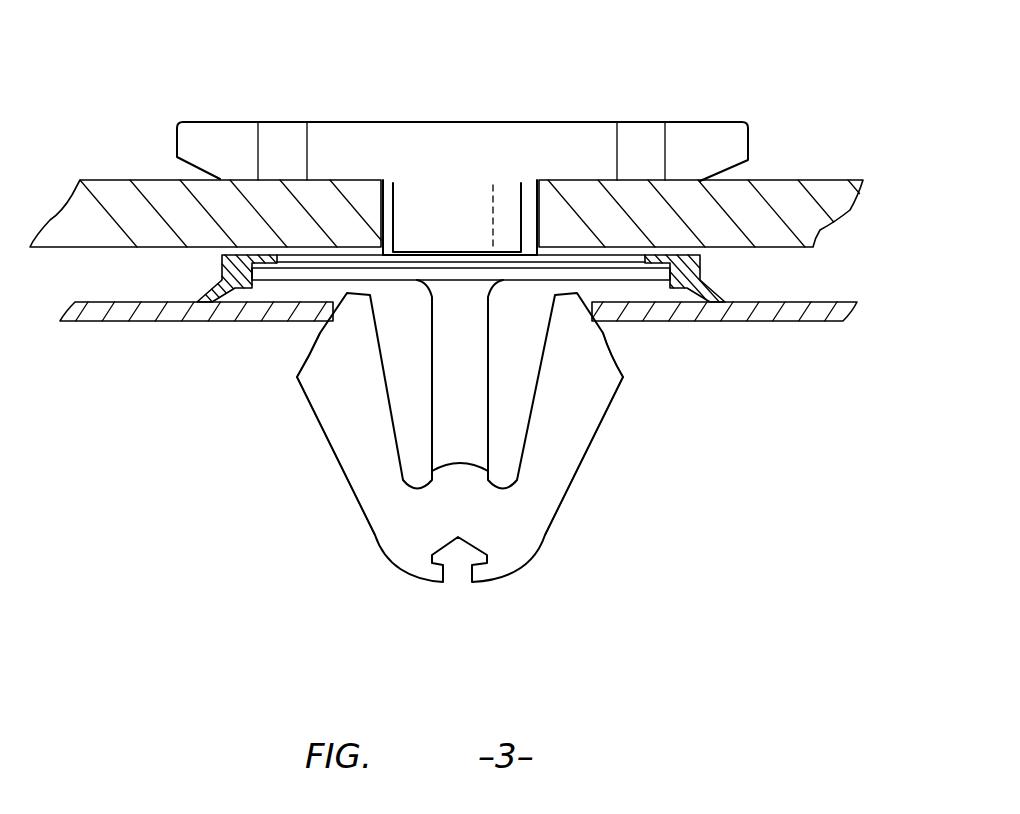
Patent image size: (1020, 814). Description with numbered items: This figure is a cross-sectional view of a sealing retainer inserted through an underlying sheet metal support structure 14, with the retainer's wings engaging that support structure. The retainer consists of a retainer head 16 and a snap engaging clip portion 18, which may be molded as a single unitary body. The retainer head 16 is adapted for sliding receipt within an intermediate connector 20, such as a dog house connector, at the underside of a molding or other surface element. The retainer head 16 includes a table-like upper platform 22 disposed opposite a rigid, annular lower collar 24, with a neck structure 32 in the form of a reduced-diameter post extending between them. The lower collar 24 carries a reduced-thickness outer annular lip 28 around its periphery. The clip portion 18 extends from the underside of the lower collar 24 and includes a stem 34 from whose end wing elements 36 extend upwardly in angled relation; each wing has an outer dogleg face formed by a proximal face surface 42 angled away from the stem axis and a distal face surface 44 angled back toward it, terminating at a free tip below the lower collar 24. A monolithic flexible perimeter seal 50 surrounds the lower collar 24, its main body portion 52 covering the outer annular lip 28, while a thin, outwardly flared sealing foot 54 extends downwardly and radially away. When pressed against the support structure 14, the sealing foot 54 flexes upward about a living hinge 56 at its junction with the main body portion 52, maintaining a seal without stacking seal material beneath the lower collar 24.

The sheet metal support structure 14 is at (471, 338).
The retainer head 16 is at (462, 158).
The snap engaging clip portion 18 is at (462, 456).
The intermediate connector 20 is at (828, 182).
The upper platform 22 is at (353, 138).
The lower collar 24 is at (462, 330).
The outer annular lip 28 is at (258, 273).
The neck structure 32 is at (457, 207).
The stem 34 is at (450, 420).
The wing elements 36 is at (370, 485).
The proximal face surface 42 is at (312, 412).
The distal face surface 44 is at (318, 347).
The perimeter seal 50 is at (461, 207).
The main body portion 52 is at (715, 268).
The sealing foot 54 is at (755, 306).
The living hinge 56 is at (220, 263).